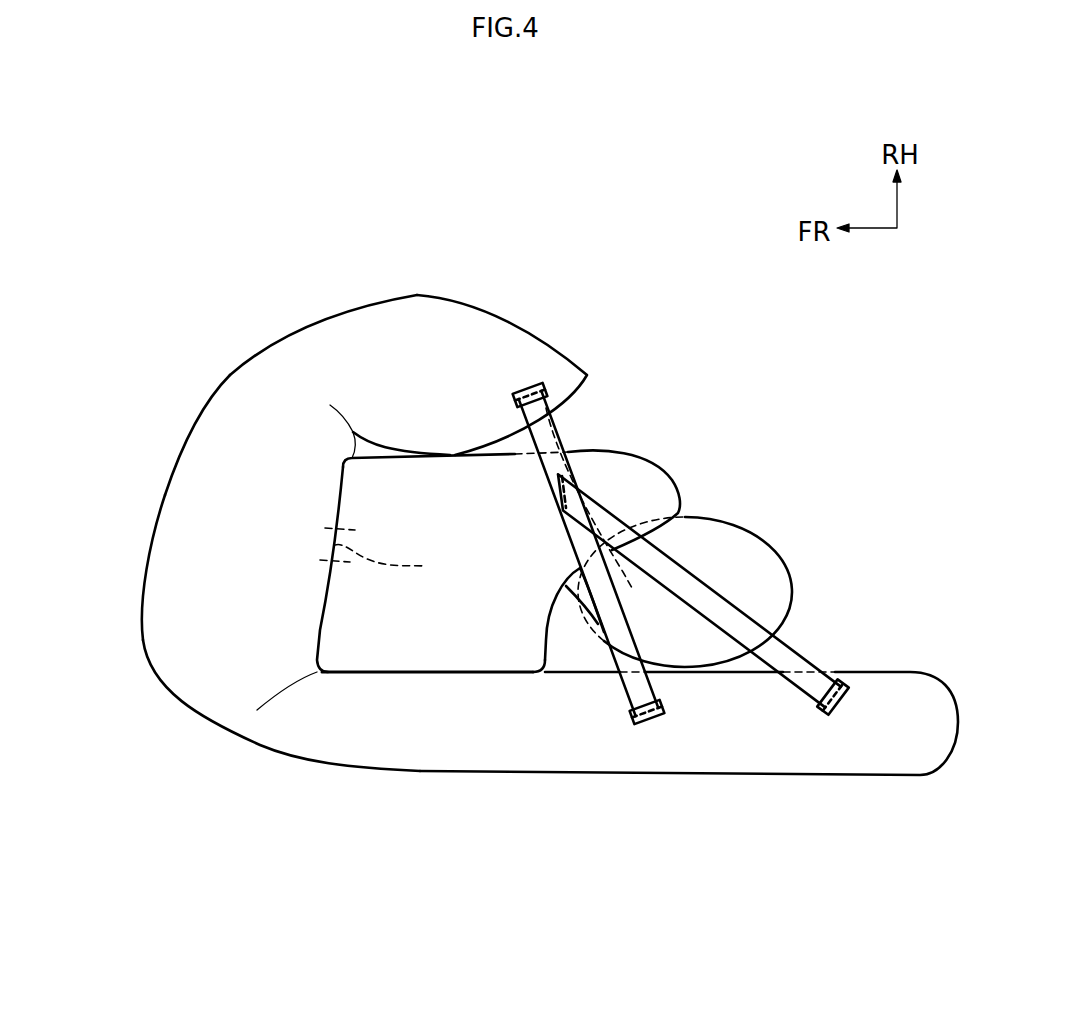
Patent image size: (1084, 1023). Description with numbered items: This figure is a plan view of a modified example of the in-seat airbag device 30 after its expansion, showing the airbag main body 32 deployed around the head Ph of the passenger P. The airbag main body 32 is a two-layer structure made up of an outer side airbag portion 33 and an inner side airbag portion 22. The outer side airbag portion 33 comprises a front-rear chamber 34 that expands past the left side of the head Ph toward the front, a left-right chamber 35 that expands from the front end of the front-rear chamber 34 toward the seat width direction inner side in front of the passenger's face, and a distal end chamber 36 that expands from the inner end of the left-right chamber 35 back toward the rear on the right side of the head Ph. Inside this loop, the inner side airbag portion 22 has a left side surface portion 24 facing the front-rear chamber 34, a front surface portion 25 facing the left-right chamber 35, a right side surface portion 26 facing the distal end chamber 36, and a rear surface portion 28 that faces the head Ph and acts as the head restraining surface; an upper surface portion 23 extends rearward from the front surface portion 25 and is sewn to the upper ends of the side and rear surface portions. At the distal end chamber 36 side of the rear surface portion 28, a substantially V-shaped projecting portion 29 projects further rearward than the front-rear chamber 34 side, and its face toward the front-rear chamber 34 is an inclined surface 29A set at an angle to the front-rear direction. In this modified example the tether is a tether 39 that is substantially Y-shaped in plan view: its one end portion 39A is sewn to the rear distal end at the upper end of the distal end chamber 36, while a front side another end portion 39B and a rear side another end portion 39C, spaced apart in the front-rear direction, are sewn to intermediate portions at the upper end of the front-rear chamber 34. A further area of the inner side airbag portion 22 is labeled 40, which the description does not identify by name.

The inner side airbag portion 22 is at (372, 455).
The upper surface portion 23 is at (436, 650).
The left side surface portion 24 is at (380, 675).
The front surface portion 25 is at (317, 663).
The right side surface portion 26 is at (403, 480).
The rear surface portion 28 is at (553, 647).
The projecting portion 29 is at (641, 464).
The inclined surface 29A is at (610, 555).
The airbag device 30 is at (213, 740).
The airbag main body 32 is at (137, 607).
The outer side airbag portion 33 is at (192, 423).
The front-rear chamber 34 is at (510, 760).
The left-right chamber 35 is at (163, 542).
The distal end chamber 36 is at (418, 327).
The tether 39 is at (547, 485).
The one end portion 39A is at (520, 383).
The front side another end portion 39B is at (648, 725).
The rear side another end portion 39C is at (843, 713).
The seat back region 40 is at (390, 569).
The passenger P is at (752, 520).
The head Ph is at (772, 587).